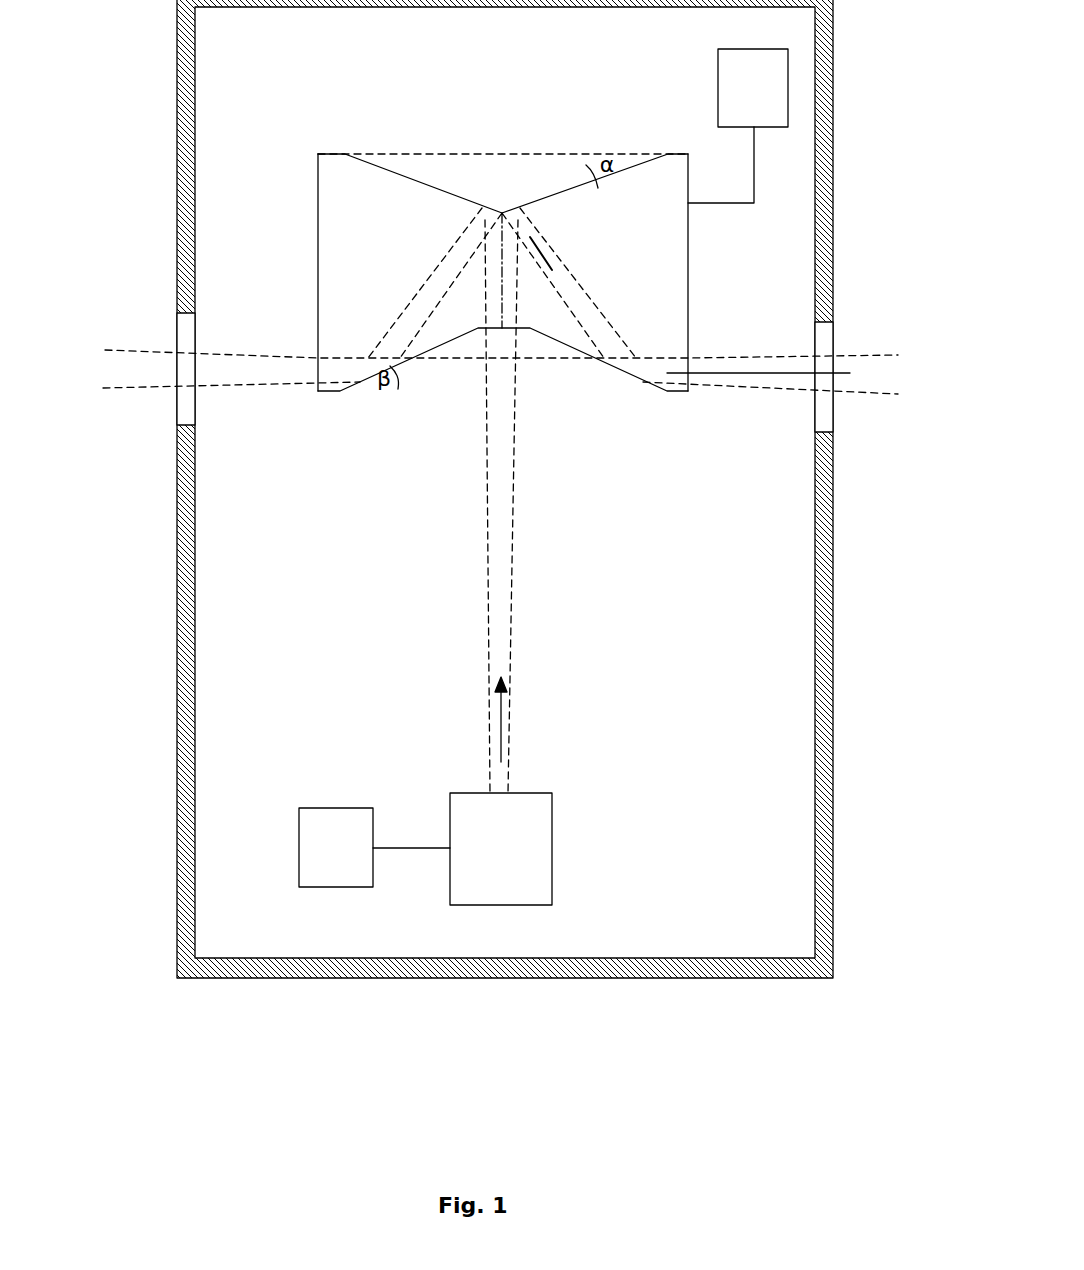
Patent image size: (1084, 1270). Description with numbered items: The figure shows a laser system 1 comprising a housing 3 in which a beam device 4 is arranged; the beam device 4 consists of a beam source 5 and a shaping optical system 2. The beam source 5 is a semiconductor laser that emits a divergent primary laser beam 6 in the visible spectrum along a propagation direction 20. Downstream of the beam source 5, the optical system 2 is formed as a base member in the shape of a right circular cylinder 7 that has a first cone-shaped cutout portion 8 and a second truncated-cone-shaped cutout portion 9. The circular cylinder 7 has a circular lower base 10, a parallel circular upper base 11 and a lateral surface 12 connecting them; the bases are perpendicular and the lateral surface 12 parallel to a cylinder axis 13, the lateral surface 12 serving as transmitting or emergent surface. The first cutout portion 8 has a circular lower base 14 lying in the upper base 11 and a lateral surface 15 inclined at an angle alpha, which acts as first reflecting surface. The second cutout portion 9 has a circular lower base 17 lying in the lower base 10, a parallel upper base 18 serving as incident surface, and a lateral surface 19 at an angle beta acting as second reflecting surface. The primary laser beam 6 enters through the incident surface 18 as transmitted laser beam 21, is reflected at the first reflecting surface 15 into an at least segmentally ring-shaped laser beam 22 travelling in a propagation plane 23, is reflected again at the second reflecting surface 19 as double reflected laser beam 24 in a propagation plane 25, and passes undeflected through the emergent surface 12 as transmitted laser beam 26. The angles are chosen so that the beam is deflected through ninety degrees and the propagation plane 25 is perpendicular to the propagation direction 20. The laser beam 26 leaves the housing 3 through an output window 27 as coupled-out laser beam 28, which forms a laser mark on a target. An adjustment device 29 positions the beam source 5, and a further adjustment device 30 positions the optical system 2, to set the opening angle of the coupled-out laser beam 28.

The laser system 1 is at (155, 513).
The optical system 2 is at (590, 522).
The housing 3 is at (185, 868).
The beam device 4 is at (360, 602).
The beam source 5 is at (493, 860).
The primary laser beam 6 is at (512, 622).
The circular cylinder 7 is at (318, 184).
The first cone-shaped cutout portion 8 is at (492, 194).
The second truncated-cone-shaped cutout portion 9 is at (452, 378).
The lower base 10 is at (328, 393).
The upper base 11 is at (330, 153).
The lateral surface 12 is at (318, 246).
The cylinder axis 13 is at (505, 319).
The lower base of first cutout portion 14 is at (497, 153).
The lateral surface of first cutout portion 15 is at (393, 173).
The lower base of second cutout portion 17 is at (623, 393).
The upper base of second cutout portion 18 is at (500, 330).
The lateral surface of second cutout portion 19 is at (432, 387).
The propagation direction 20 is at (501, 722).
The transmitted laser beam 21 is at (480, 283).
The ring-shaped laser beam 22 is at (400, 315).
The propagation plane 23 is at (553, 262).
The double reflected laser beam 24 is at (362, 358).
The propagation plane 25 is at (767, 373).
The transmitted laser beam 26 is at (250, 388).
The output window 27 is at (187, 325).
The coupled-out laser beam 28 is at (130, 396).
The adjustment device 29 is at (322, 860).
The further adjustment device 30 is at (740, 100).